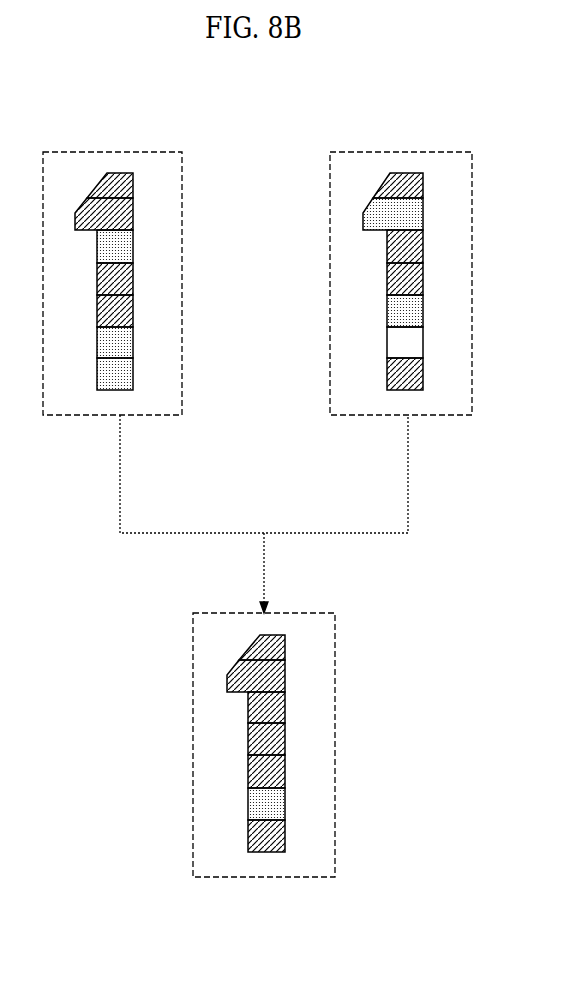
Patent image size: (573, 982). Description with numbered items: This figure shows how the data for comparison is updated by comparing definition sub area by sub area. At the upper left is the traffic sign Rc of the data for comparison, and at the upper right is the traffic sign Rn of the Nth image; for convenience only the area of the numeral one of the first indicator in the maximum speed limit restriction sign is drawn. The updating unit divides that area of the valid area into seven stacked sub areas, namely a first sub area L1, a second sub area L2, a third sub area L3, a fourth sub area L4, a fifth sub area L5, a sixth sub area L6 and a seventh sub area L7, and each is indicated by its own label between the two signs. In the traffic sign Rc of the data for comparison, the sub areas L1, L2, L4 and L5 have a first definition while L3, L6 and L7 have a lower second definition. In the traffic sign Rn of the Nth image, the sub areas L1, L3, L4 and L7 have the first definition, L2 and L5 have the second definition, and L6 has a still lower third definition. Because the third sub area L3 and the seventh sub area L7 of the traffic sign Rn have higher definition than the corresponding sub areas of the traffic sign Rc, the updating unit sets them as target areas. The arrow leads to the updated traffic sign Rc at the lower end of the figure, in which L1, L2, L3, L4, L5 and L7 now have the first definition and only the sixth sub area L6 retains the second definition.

The first sub area L1 is at (395, 190).
The second sub area L2 is at (395, 222).
The third sub area L3 is at (395, 253).
The fourth sub area L4 is at (395, 285).
The fifth sub area L5 is at (395, 317).
The sixth sub area L6 is at (395, 350).
The seventh sub area L7 is at (395, 382).
The traffic sign of the data for comparison Rc is at (83, 415).
The traffic sign of the Nth image Rn is at (453, 415).